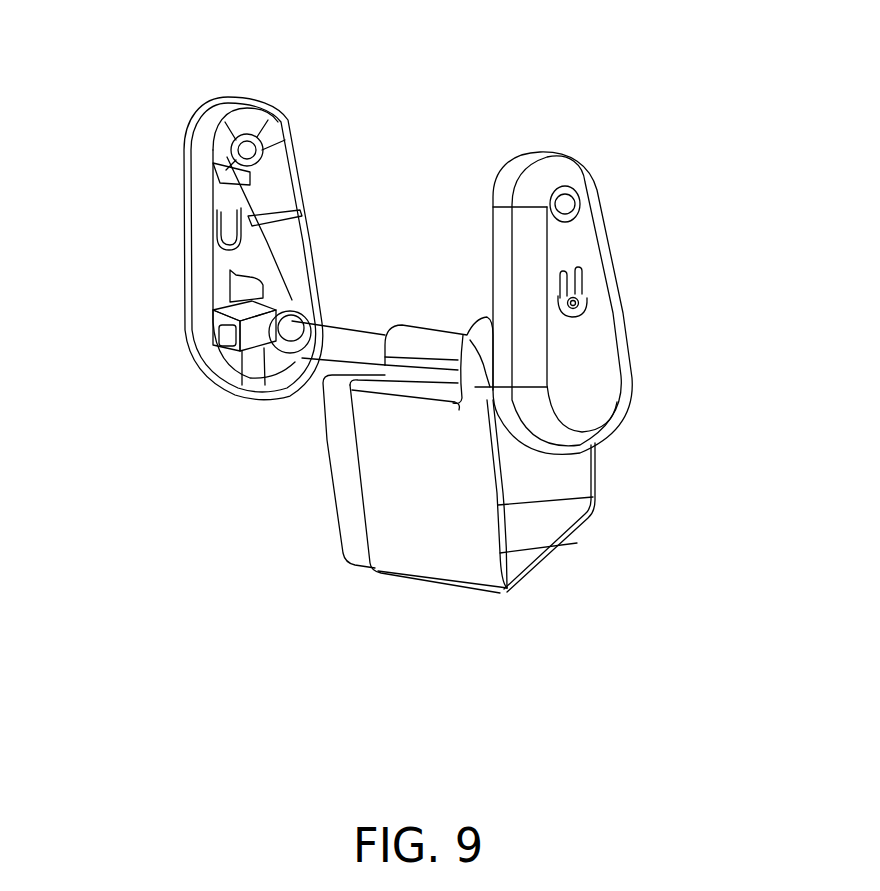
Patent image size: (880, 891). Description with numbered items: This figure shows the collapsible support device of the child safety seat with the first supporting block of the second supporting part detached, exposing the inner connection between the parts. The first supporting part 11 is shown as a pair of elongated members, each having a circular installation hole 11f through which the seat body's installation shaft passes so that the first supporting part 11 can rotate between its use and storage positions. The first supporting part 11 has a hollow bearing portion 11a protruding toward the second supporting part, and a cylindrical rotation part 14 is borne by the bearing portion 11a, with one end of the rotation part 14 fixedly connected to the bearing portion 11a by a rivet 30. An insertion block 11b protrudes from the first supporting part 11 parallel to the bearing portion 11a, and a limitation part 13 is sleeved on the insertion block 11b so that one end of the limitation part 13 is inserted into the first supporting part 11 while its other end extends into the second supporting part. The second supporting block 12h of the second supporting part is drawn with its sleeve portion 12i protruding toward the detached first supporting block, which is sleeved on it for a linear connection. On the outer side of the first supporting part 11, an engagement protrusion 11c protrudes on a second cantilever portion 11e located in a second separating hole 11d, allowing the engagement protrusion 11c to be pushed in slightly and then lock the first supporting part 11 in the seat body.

The first supporting part 11 is at (193, 172).
The bearing portion 11a is at (260, 310).
The insertion block 11b is at (227, 337).
The engagement protrusion 11c is at (590, 295).
The second separating hole 11d is at (582, 322).
The second cantilever portion 11e is at (215, 218).
The installation hole 11f is at (250, 150).
The second supporting block 12h is at (443, 527).
The sleeve portion 12i is at (353, 485).
The limitation part 13 is at (253, 337).
The rotation part 14 is at (357, 322).
The rivet 30 is at (289, 310).